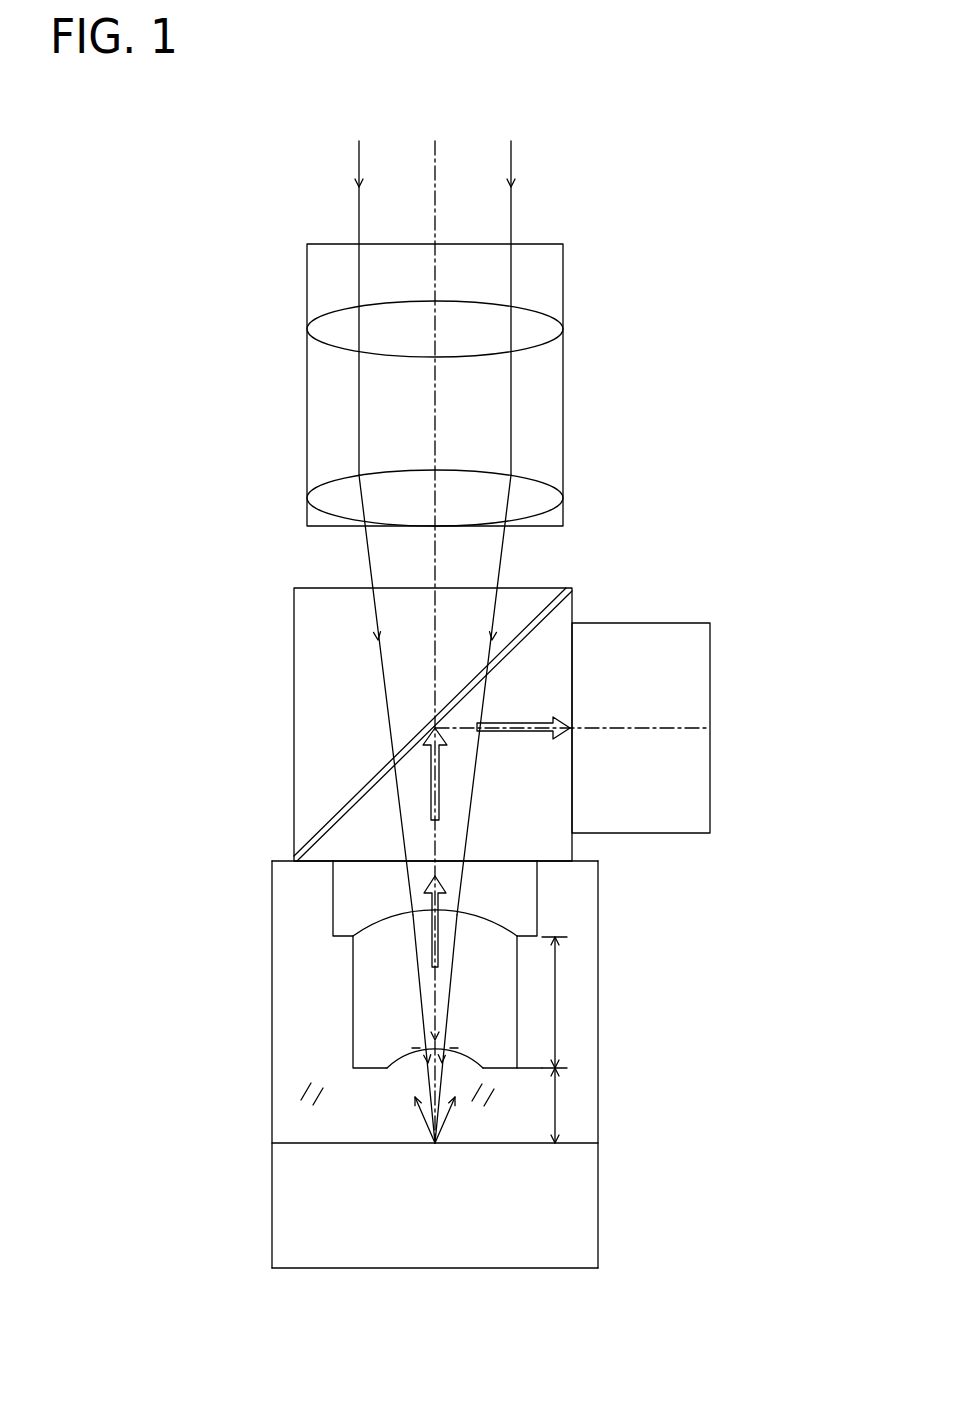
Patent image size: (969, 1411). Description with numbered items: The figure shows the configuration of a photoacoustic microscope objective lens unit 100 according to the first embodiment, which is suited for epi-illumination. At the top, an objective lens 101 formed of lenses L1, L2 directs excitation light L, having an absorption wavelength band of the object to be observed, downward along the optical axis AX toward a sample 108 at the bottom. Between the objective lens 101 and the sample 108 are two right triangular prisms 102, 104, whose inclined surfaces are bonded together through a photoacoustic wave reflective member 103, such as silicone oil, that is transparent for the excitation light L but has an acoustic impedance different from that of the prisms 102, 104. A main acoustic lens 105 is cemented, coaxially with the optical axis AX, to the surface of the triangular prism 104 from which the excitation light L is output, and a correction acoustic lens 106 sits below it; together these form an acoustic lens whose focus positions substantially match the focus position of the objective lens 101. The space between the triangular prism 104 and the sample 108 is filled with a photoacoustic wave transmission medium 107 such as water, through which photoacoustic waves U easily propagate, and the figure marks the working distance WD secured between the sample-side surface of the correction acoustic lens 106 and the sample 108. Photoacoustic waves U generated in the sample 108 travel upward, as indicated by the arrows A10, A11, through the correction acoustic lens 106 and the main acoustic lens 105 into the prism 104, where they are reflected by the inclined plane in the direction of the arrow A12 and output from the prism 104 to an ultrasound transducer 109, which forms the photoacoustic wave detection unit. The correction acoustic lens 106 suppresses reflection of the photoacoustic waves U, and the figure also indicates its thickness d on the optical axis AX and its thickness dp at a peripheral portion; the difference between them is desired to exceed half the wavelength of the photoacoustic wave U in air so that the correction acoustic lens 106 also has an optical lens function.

The photoacoustic microscope objective lens unit 100 is at (632, 152).
The objective lens 101 is at (445, 385).
The triangular prism 102 is at (462, 739).
The photoacoustic wave reflective member 103 is at (337, 820).
The triangular prism 104 is at (572, 842).
The main acoustic lens 105 is at (333, 909).
The correction acoustic lens 106 is at (353, 1013).
The photoacoustic wave transmission medium 107 is at (272, 1096).
The sample 108 is at (272, 1208).
The ultrasound transducer 109 is at (710, 705).
The excitation light L is at (359, 213).
The lens L1 is at (333, 323).
The lens L2 is at (333, 498).
The optical axis AX is at (437, 402).
The reflected light direction A10 is at (430, 938).
The returning light direction A11 is at (444, 792).
The arrow A12 is at (520, 722).
The photoacoustic waves U is at (425, 1125).
The thickness of the correction acoustic lens on the optical axis d is at (437, 980).
The thickness of the correction acoustic lens at a peripheral portion dp is at (555, 1006).
The working distance WD is at (555, 1105).